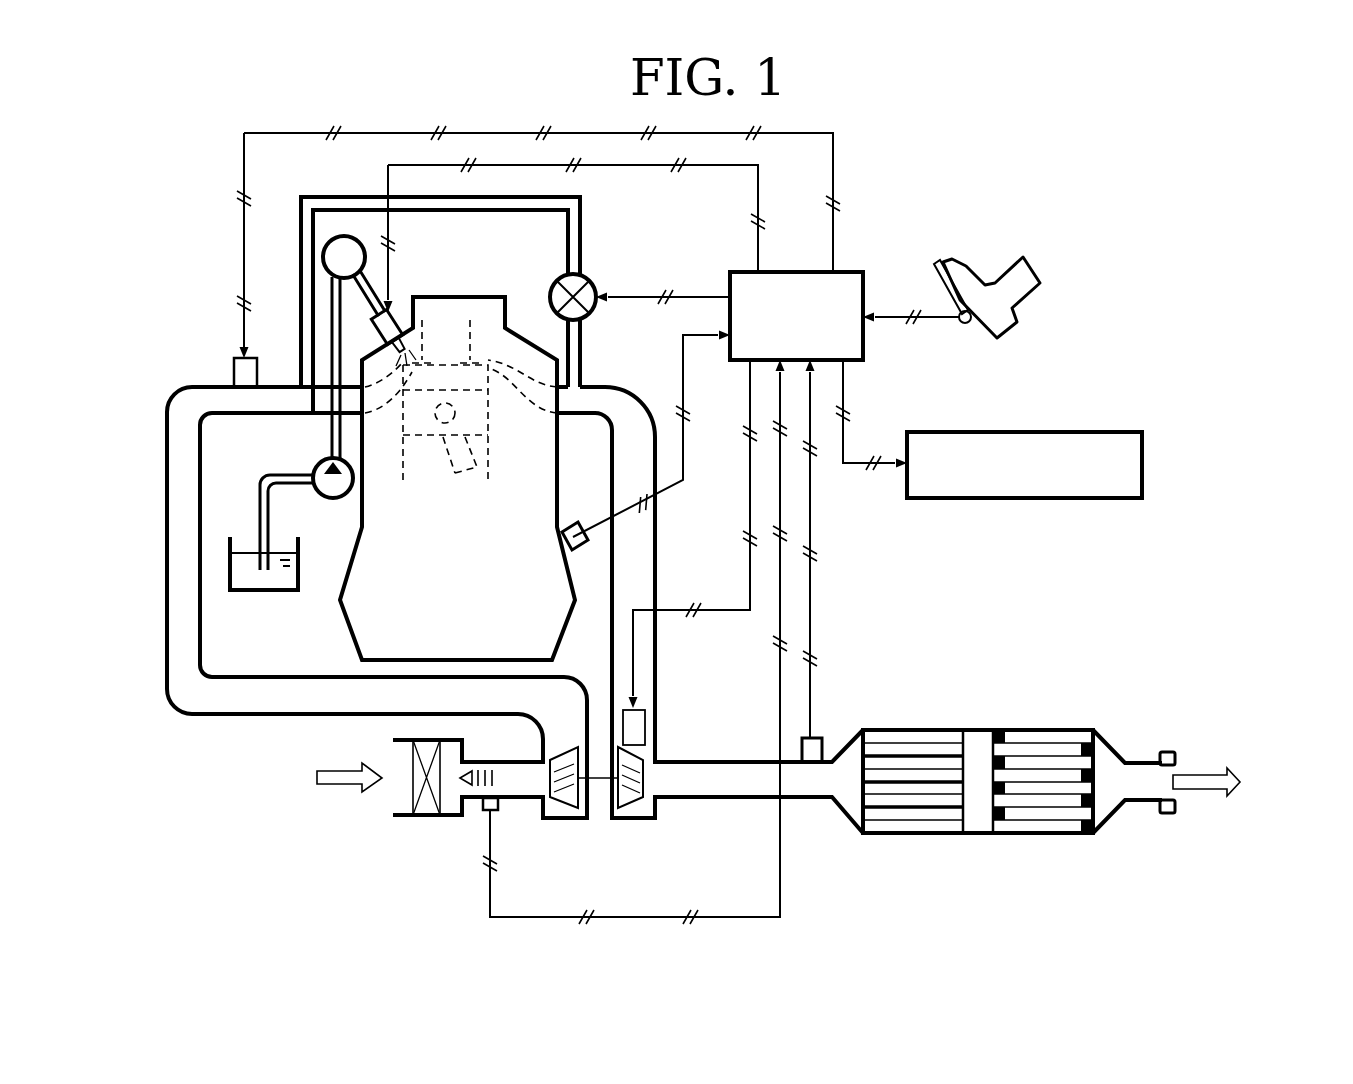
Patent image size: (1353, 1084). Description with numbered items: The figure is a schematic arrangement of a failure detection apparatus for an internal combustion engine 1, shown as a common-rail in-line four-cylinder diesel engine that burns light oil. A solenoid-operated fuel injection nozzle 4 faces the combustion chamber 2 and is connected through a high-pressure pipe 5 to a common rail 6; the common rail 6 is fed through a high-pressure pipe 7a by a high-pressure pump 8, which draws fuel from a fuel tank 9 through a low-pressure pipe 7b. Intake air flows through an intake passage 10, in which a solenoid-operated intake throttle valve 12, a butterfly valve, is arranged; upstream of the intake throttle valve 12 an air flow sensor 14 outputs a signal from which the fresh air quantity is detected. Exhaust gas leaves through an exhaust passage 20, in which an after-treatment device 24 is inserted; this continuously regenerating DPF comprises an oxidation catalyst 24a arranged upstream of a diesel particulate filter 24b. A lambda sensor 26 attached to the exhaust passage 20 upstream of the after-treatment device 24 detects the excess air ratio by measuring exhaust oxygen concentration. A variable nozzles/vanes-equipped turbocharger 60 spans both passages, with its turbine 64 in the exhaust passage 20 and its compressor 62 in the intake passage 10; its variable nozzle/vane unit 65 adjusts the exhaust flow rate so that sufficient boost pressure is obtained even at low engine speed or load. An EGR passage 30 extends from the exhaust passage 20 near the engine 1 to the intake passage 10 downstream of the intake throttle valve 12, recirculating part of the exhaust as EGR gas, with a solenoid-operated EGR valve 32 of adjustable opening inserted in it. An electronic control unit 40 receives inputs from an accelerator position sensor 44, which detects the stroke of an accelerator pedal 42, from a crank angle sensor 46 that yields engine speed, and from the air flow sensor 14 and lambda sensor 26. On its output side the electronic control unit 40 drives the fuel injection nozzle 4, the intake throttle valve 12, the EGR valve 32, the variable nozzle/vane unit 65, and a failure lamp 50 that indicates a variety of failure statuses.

The internal combustion engine 1 is at (342, 622).
The combustion chamber 2 is at (445, 375).
The fuel injection nozzle 4 is at (380, 325).
The high-pressure pipe 5 is at (368, 288).
The common rail 6 is at (335, 255).
The high-pressure pipe 7a is at (331, 440).
The low-pressure pipe 7b is at (260, 512).
The high-pressure pump 8 is at (331, 499).
The fuel tank 9 is at (245, 591).
The intake passage 10 is at (278, 405).
The intake throttle valve 12 is at (232, 396).
The air flow sensor 14 is at (485, 815).
The exhaust passage 20 is at (710, 631).
The after-treatment device 24 is at (970, 845).
The oxidation catalyst 24a is at (910, 735).
The diesel particulate filter 24b is at (1033, 745).
The lambda sensor 26 is at (822, 745).
The EGR passage 30 is at (584, 218).
The EGR valve 32 is at (596, 278).
The electronic control unit 40 is at (850, 272).
The accelerator pedal 42 is at (938, 260).
The accelerator position sensor 44 is at (965, 325).
The crank angle sensor 46 is at (575, 522).
The failure lamp 50 is at (1142, 440).
The variable nozzles/vanes-equipped turbocharger 60 is at (597, 836).
The compressor 62 is at (565, 810).
The turbine 64 is at (634, 808).
The variable nozzle/vane unit 65 is at (650, 735).